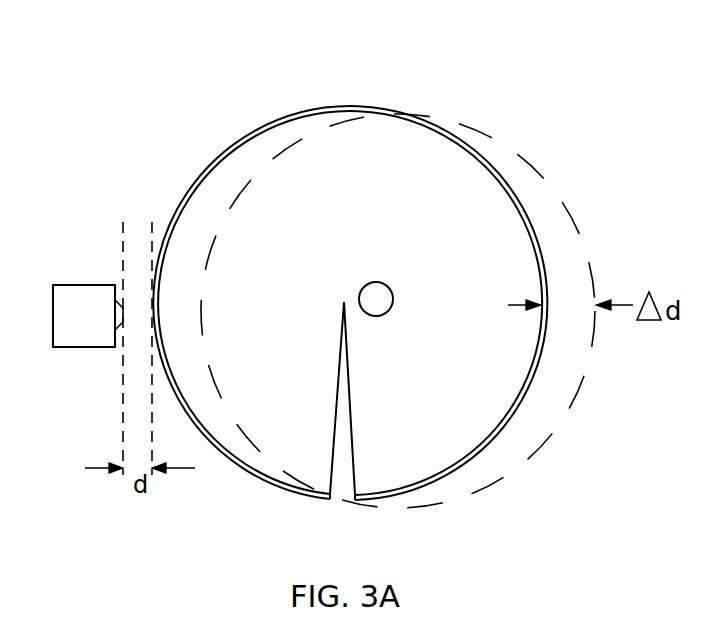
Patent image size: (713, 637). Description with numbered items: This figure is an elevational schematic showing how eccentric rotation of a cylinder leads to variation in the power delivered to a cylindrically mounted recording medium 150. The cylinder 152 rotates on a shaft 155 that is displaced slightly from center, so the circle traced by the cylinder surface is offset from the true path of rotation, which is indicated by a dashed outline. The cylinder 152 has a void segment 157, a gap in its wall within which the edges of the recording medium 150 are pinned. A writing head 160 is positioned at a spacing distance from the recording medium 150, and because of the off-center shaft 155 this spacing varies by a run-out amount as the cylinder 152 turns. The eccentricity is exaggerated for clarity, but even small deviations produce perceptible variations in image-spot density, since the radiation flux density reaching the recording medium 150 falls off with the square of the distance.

The recording medium 150 is at (262, 127).
The cylinder 152 is at (325, 127).
The shaft 155 is at (383, 284).
The void segment 157 is at (343, 490).
The writing head 160 is at (64, 285).